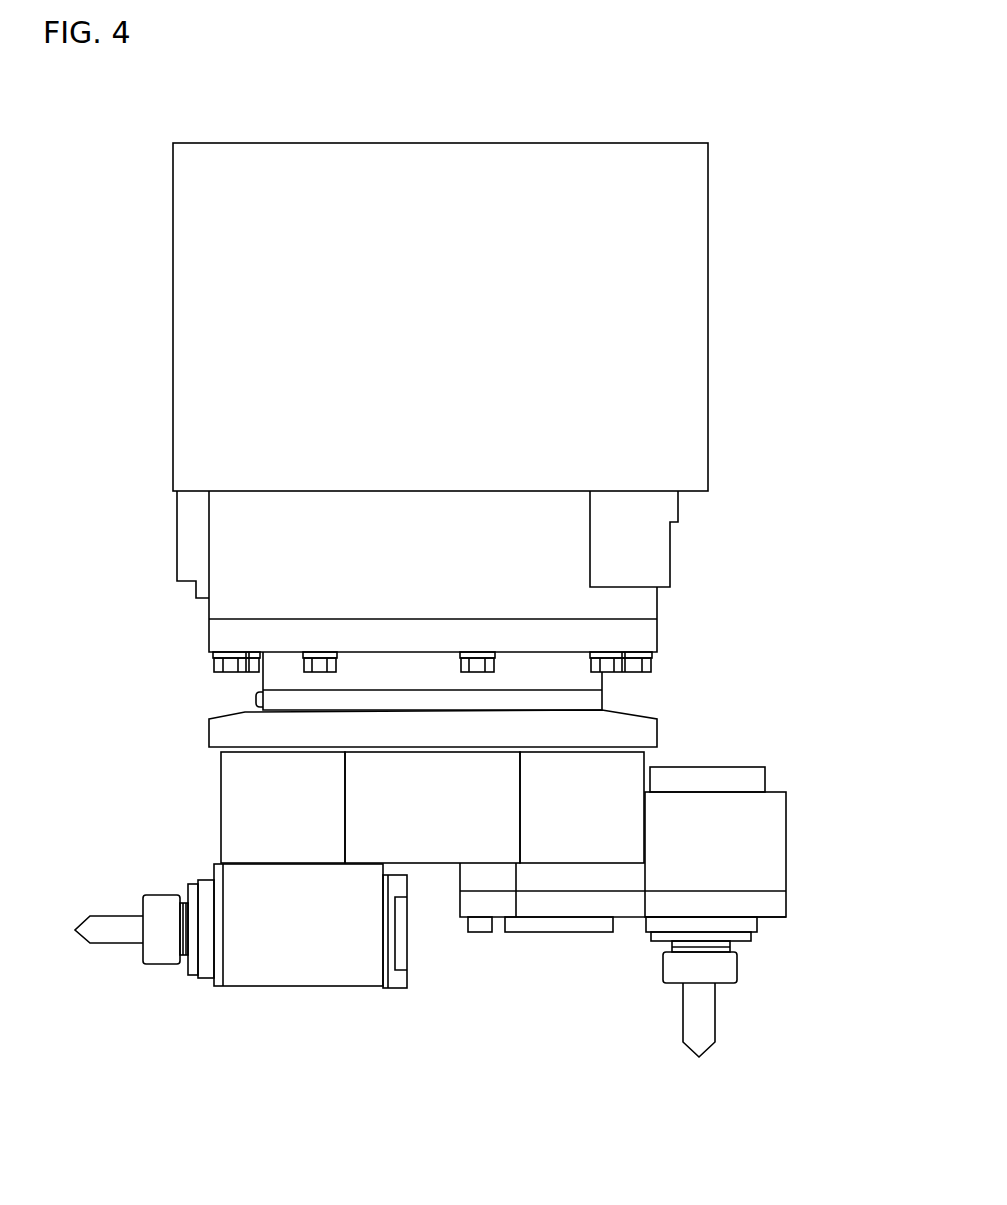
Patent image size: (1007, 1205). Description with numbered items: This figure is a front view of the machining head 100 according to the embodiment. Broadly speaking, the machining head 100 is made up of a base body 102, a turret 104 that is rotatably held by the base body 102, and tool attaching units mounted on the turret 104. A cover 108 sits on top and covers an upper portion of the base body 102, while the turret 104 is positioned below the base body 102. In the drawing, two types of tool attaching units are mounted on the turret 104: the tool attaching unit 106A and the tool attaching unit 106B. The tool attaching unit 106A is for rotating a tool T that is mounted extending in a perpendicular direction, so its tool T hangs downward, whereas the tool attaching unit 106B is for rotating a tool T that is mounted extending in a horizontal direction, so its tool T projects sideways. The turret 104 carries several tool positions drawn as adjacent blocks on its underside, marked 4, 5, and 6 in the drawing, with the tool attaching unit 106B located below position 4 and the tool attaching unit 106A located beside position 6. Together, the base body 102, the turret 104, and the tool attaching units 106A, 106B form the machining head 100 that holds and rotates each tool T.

The machining head 100 is at (640, 114).
The cover 108 is at (182, 238).
The base body 102 is at (126, 609).
The turret 104 is at (378, 786).
The tool head 4 is at (283, 807).
The tool head 5 is at (432, 807).
The tool head 6 is at (582, 807).
The tool attaching unit 106A is at (800, 825).
The tool attaching unit 106B is at (246, 1012).
The tool T is at (107, 935).